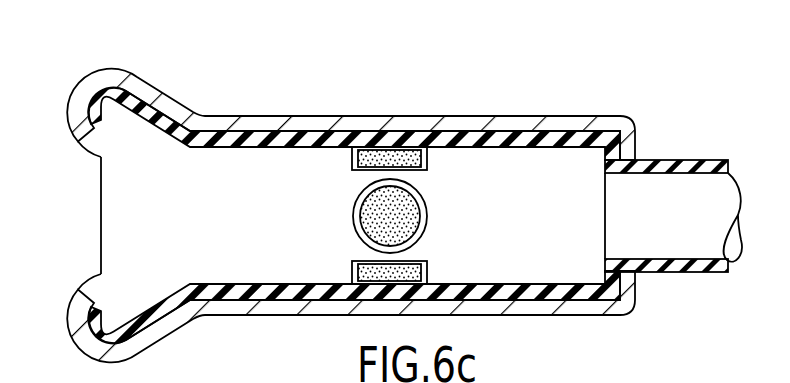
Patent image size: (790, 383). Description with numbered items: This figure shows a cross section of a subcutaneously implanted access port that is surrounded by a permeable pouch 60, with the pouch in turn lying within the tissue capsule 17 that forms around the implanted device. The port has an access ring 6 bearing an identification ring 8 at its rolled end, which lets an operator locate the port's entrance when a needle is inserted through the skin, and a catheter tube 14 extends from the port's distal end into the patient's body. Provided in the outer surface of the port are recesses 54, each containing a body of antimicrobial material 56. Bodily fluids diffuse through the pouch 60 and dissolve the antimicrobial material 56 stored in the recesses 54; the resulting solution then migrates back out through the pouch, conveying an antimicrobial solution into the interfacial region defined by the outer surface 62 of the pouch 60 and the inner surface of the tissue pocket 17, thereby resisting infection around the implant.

The identification ring 8 is at (86, 95).
The permeable pouch 60 is at (290, 132).
The tissue capsule 17 is at (523, 117).
The outer surface of the pouch 62 is at (545, 148).
The access ring 6 is at (151, 221).
The recesses 54 is at (354, 273).
The antimicrobial material 56 is at (427, 166).
The catheter tube 14 is at (677, 225).